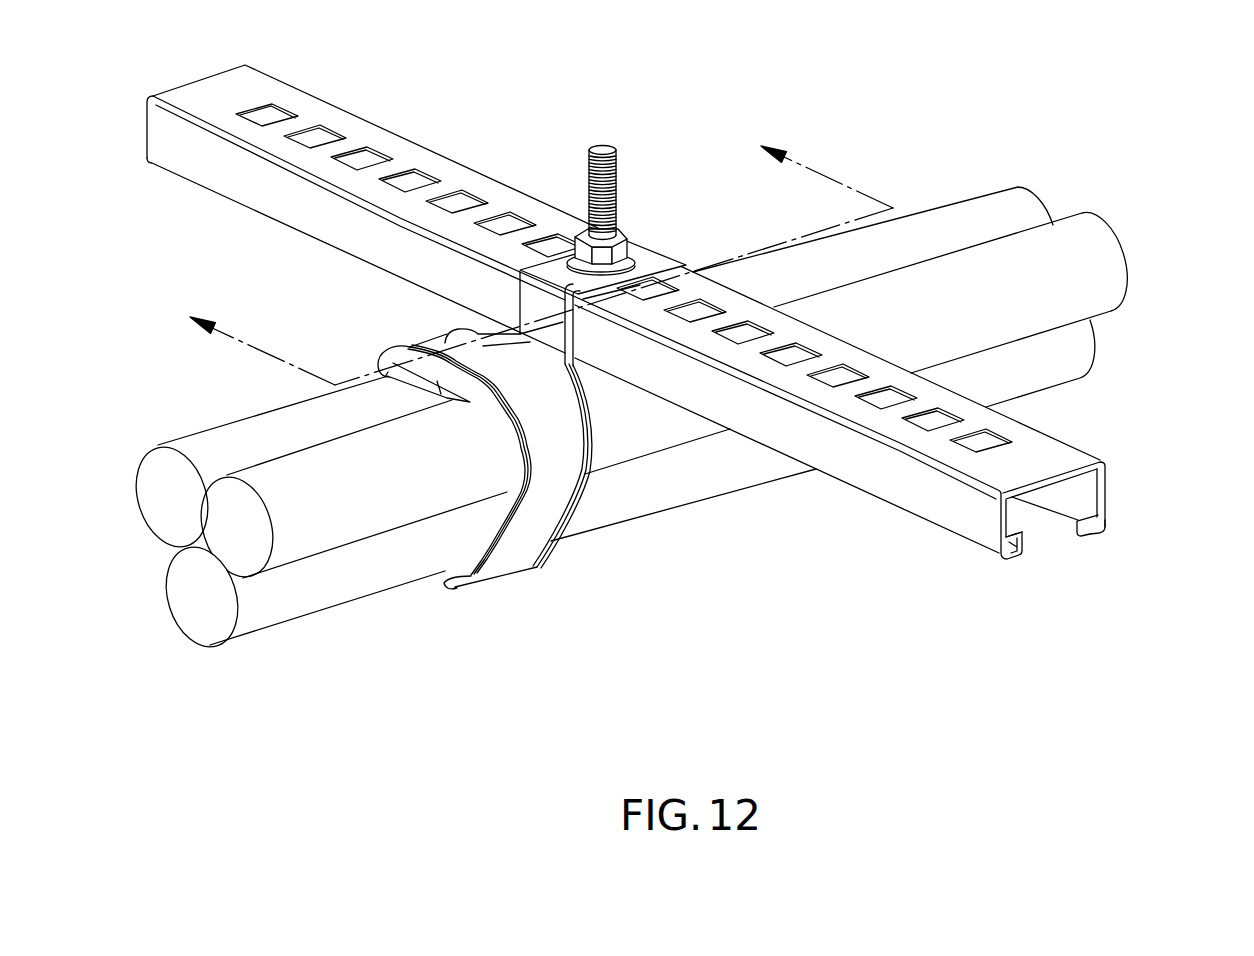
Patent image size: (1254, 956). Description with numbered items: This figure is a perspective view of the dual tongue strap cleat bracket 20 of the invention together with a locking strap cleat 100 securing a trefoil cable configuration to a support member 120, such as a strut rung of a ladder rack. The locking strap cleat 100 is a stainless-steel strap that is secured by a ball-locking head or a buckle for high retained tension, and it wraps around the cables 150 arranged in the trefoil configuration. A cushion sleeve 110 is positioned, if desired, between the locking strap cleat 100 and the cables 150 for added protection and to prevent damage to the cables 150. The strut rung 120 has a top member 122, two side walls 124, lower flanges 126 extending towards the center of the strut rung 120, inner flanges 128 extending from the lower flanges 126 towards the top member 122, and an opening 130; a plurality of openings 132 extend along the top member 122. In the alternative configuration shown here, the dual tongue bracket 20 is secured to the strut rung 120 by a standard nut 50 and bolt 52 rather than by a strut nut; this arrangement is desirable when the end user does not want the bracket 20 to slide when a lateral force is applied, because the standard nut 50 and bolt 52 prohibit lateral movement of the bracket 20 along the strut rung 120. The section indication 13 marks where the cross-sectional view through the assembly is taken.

The section line 13- 13 is at (541, 266).
The dual tongue strap cleat bracket 20 is at (481, 296).
The standard nut 50 is at (603, 250).
The bolt 52 is at (598, 145).
The locking strap cleat 100 is at (514, 547).
The cushion sleeve 110 is at (553, 547).
The support member 120 is at (1105, 480).
The top member 122 is at (1043, 457).
The side walls 124 is at (1105, 510).
The lower flanges 126 is at (1090, 537).
The inner flanges 128 is at (1055, 517).
The opening 130 is at (1030, 525).
The openings 132 is at (992, 437).
The cables 150 is at (1087, 273).